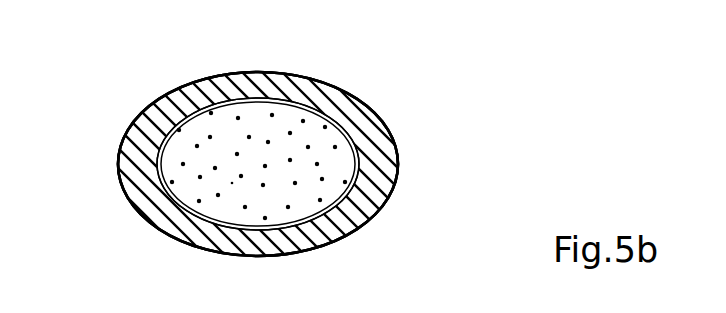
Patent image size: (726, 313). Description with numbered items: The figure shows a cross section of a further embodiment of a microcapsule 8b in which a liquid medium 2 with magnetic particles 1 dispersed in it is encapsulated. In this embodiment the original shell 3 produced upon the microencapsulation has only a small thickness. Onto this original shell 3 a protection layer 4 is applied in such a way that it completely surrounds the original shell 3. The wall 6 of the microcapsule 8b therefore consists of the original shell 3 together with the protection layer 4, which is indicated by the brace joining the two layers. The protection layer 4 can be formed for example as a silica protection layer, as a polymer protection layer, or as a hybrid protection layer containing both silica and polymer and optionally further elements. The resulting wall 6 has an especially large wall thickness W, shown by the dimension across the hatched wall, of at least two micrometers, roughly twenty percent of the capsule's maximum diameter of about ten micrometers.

The magnetic particles 1 is at (322, 166).
The liquid medium 2 is at (322, 147).
The original shell 3 is at (362, 184).
The protection layer 4 is at (362, 206).
The wall 6 is at (439, 190).
The microcapsule 8b is at (122, 110).
The wall thickness W is at (156, 167).